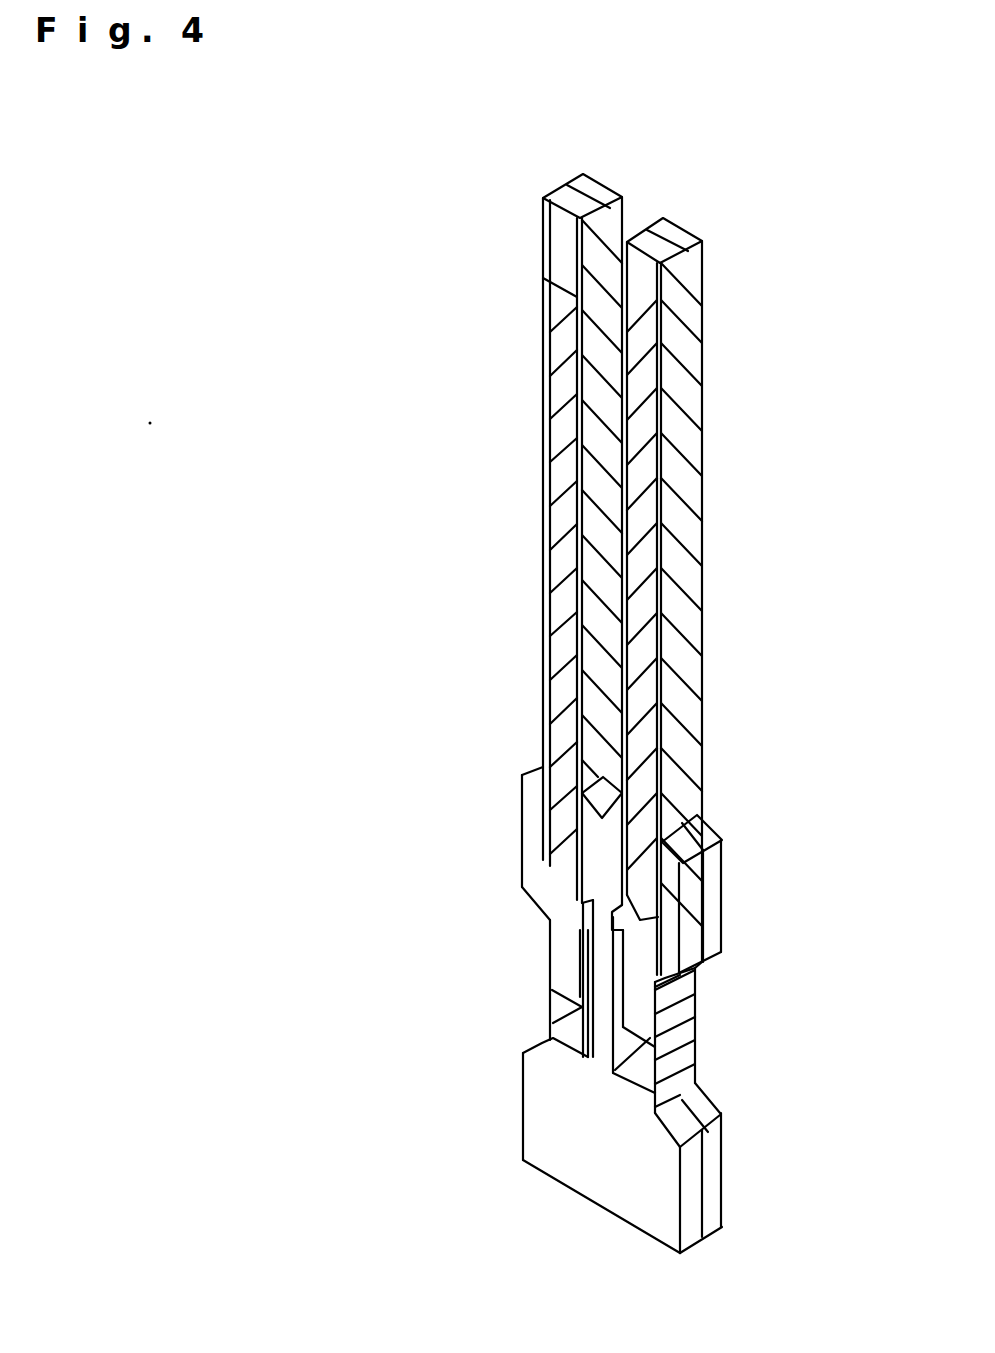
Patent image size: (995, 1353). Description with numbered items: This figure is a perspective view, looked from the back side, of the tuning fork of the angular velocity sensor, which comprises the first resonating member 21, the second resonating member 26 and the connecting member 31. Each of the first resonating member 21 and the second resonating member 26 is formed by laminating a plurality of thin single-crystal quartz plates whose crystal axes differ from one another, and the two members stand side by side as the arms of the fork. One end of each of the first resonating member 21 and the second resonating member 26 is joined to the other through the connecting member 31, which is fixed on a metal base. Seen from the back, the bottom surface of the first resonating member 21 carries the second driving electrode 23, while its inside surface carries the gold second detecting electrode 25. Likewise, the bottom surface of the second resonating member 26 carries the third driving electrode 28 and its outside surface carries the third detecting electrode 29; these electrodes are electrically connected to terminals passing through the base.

The first resonating member 21 is at (563, 250).
The second driving electrode 23 is at (558, 425).
The second detecting electrode 25 is at (592, 530).
The second resonating member 26 is at (643, 288).
The third driving electrode 28 is at (643, 423).
The third detecting electrode 29 is at (690, 493).
The connecting member 31 is at (602, 880).